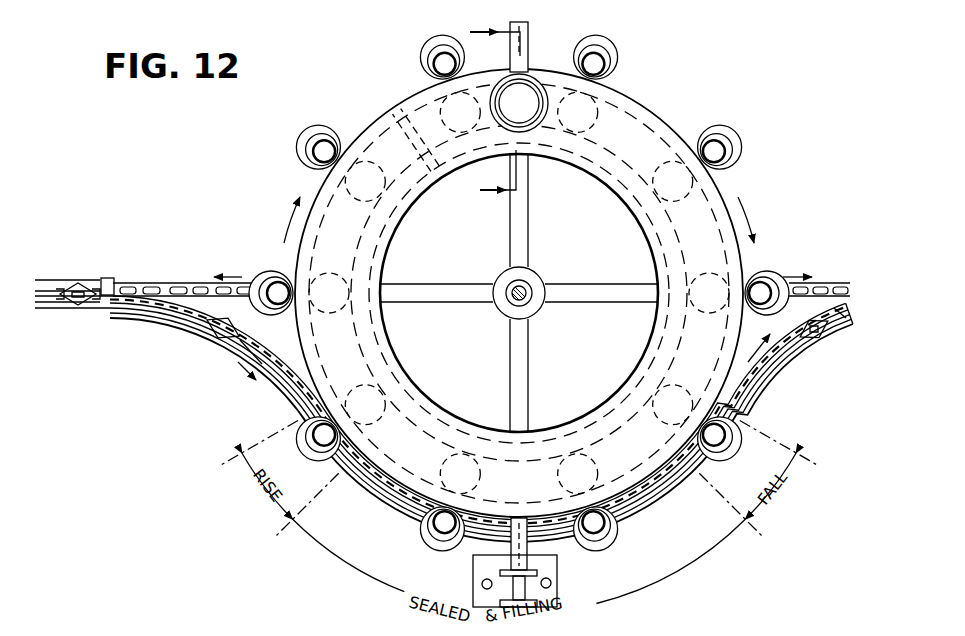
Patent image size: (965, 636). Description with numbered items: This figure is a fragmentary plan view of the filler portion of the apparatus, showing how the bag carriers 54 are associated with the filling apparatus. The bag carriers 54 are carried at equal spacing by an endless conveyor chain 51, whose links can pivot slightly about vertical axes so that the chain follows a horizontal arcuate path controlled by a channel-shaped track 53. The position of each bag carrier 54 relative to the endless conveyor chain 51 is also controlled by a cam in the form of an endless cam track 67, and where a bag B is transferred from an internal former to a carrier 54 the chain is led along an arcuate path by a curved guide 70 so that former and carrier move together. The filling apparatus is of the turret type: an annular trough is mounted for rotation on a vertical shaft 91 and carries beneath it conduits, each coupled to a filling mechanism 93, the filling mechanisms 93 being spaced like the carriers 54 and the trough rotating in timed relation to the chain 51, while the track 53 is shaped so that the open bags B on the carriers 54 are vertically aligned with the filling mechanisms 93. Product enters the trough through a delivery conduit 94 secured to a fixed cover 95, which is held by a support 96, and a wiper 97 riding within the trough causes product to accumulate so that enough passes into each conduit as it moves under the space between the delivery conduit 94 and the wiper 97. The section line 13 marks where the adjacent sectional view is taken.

The endless conveyor chain 51 is at (198, 283).
The channel-shaped track 53 is at (205, 326).
The bag carrier 54 is at (56, 310).
The cam track 67 is at (120, 308).
The curved guide 70 is at (108, 279).
The vertical shaft 91 is at (540, 311).
The filling mechanism 93 is at (424, 48).
The delivery conduit 94 is at (534, 78).
The fixed cover 95 is at (660, 111).
The support 96 is at (558, 566).
The wiper 97 is at (398, 108).
The section line FIG. 13 is at (485, 119).
The bag B is at (78, 312).